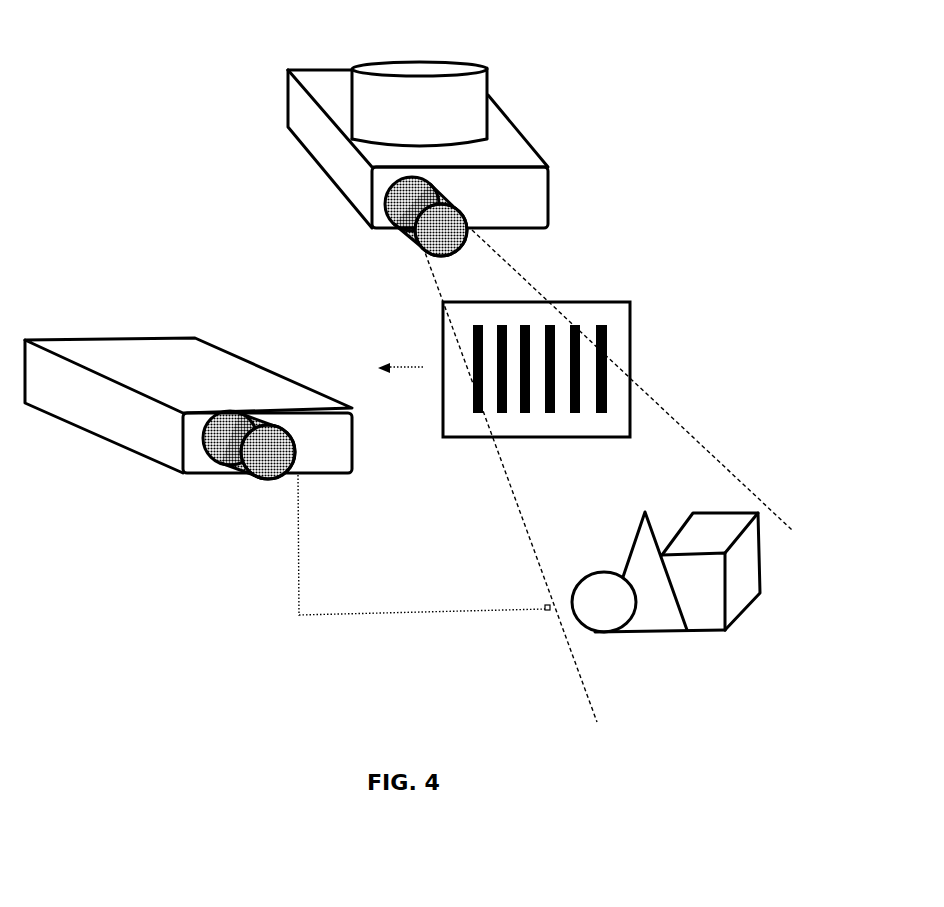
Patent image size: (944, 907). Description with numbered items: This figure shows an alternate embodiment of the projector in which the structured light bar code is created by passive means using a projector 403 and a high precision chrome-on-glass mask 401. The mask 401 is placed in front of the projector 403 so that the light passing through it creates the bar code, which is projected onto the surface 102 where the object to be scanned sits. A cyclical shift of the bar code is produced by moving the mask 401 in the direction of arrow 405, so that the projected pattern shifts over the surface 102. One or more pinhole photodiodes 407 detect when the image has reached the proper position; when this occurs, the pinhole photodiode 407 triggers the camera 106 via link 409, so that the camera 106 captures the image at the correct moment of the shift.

The surface 102 is at (730, 512).
The camera 106 is at (92, 338).
The chrome-on-glass mask 401 is at (630, 320).
The projector 403 is at (520, 130).
The arrow 405 is at (383, 364).
The pinhole photodiode 407 is at (548, 611).
The link 409 is at (323, 618).